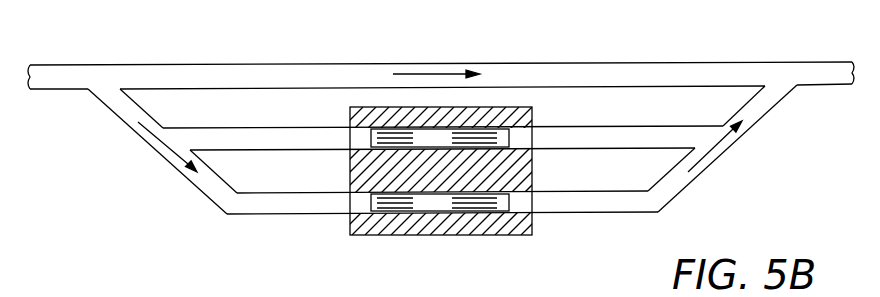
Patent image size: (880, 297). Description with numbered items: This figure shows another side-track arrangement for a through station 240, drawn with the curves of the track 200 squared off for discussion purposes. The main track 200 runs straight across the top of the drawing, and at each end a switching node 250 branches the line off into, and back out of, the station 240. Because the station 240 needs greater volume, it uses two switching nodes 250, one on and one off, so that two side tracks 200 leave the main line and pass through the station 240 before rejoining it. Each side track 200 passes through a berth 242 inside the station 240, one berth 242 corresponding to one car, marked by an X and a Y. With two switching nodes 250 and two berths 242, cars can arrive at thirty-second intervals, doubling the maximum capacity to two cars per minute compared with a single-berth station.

The track 200 is at (311, 72).
The station 240 is at (437, 244).
The berth 242 is at (492, 135).
The switching node 250 is at (99, 80).